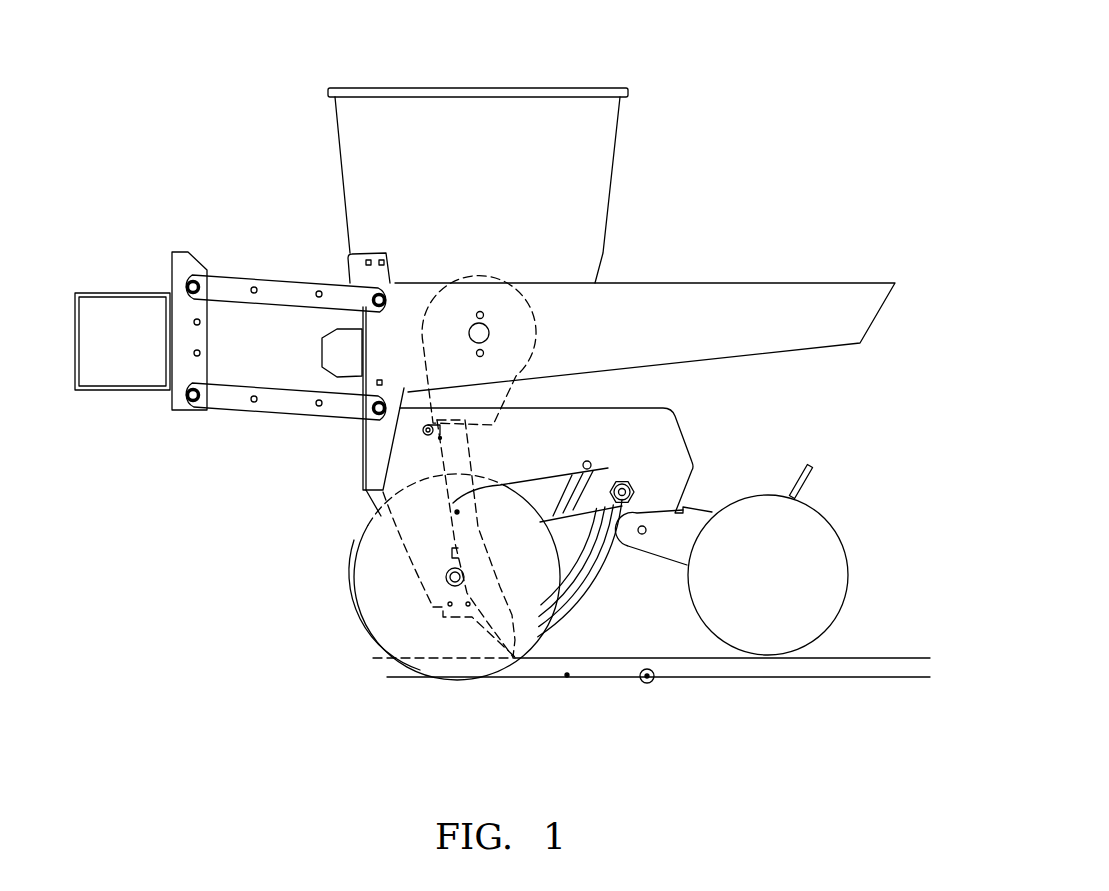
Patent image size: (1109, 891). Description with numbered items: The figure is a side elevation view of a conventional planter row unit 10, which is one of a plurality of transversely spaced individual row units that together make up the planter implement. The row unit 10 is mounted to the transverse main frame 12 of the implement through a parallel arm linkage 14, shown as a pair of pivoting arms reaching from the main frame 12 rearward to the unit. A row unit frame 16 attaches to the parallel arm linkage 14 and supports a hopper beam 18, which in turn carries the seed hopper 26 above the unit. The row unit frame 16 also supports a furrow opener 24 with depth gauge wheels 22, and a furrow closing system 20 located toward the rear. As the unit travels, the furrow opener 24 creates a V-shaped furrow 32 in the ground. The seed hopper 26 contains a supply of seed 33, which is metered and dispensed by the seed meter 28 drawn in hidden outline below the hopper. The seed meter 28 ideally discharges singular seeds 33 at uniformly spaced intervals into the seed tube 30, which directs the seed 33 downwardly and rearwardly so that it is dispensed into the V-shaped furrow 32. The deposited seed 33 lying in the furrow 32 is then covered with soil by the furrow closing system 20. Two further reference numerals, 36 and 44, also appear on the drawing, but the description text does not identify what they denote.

The planter row unit 10 is at (706, 92).
The transverse main frame 12 is at (107, 293).
The parallel arm linkage 14 is at (288, 277).
The row unit frame 16 is at (373, 447).
The hopper beam 18 is at (770, 290).
The furrow closing system 20 is at (760, 480).
The depth gauge wheels 22 is at (603, 572).
The furrow opener 24 is at (336, 573).
The seed hopper 26 is at (370, 130).
The seed meter 28 is at (528, 323).
The seed tube 30 is at (467, 530).
The V-shaped furrow 32 is at (542, 670).
The seed 33 is at (643, 683).
The gauge wheel blade 36 is at (375, 610).
The scraper 44 is at (418, 557).